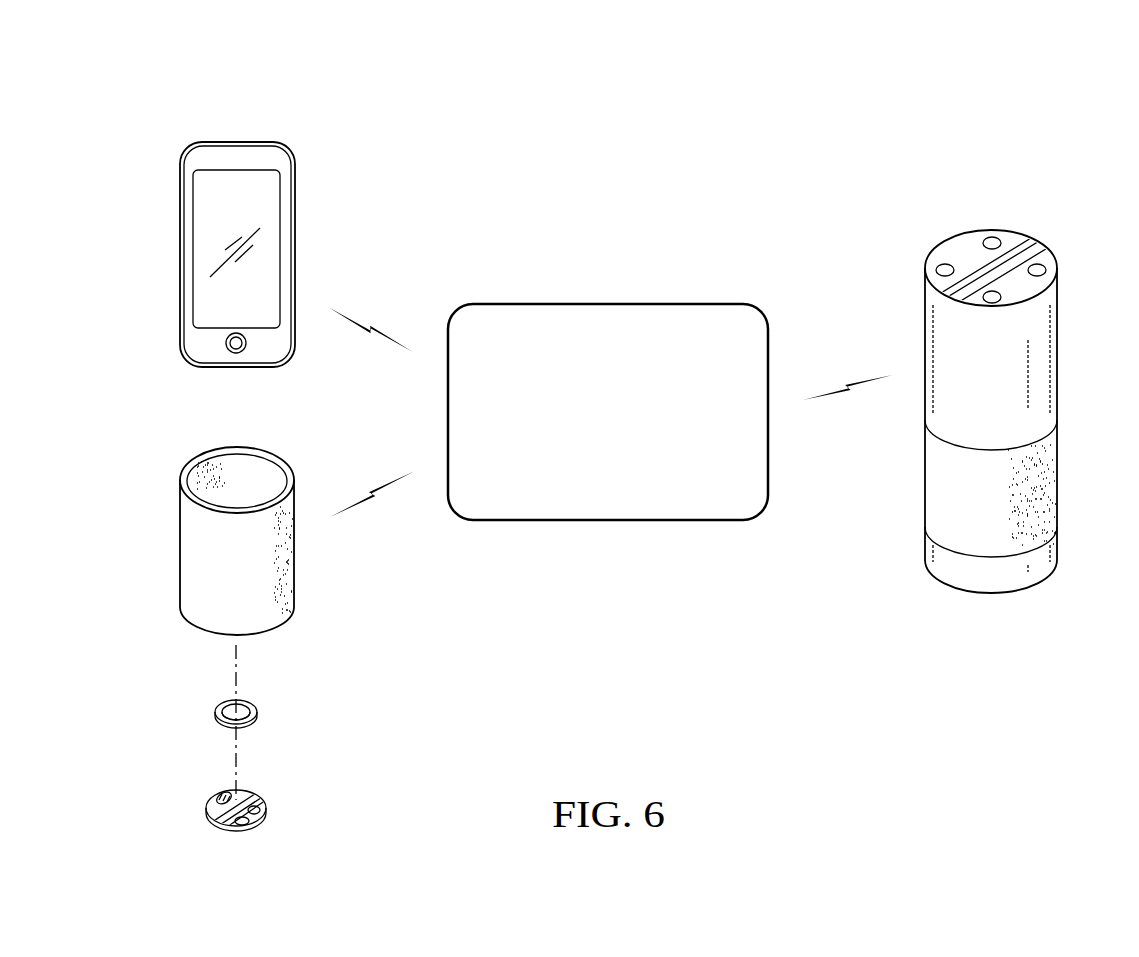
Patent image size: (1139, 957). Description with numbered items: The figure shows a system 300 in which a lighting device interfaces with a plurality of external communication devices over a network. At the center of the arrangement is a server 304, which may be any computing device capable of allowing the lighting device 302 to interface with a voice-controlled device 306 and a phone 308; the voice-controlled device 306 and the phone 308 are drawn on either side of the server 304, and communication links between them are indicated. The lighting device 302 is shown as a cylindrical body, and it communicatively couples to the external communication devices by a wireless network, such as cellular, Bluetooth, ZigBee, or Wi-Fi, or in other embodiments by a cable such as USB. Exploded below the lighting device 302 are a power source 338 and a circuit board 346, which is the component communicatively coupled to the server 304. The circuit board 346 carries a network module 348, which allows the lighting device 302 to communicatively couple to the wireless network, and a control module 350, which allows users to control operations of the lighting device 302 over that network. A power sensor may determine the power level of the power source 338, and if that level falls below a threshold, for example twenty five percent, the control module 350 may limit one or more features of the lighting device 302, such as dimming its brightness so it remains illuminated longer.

The system 300 is at (793, 99).
The lighting device 302 is at (179, 540).
The server 304 is at (630, 430).
The voice-controlled device 306 is at (1060, 400).
The phone 308 is at (179, 256).
The power source 338 is at (214, 715).
The circuit board 346 is at (232, 837).
The network module 348 is at (243, 830).
The control module 350 is at (262, 808).